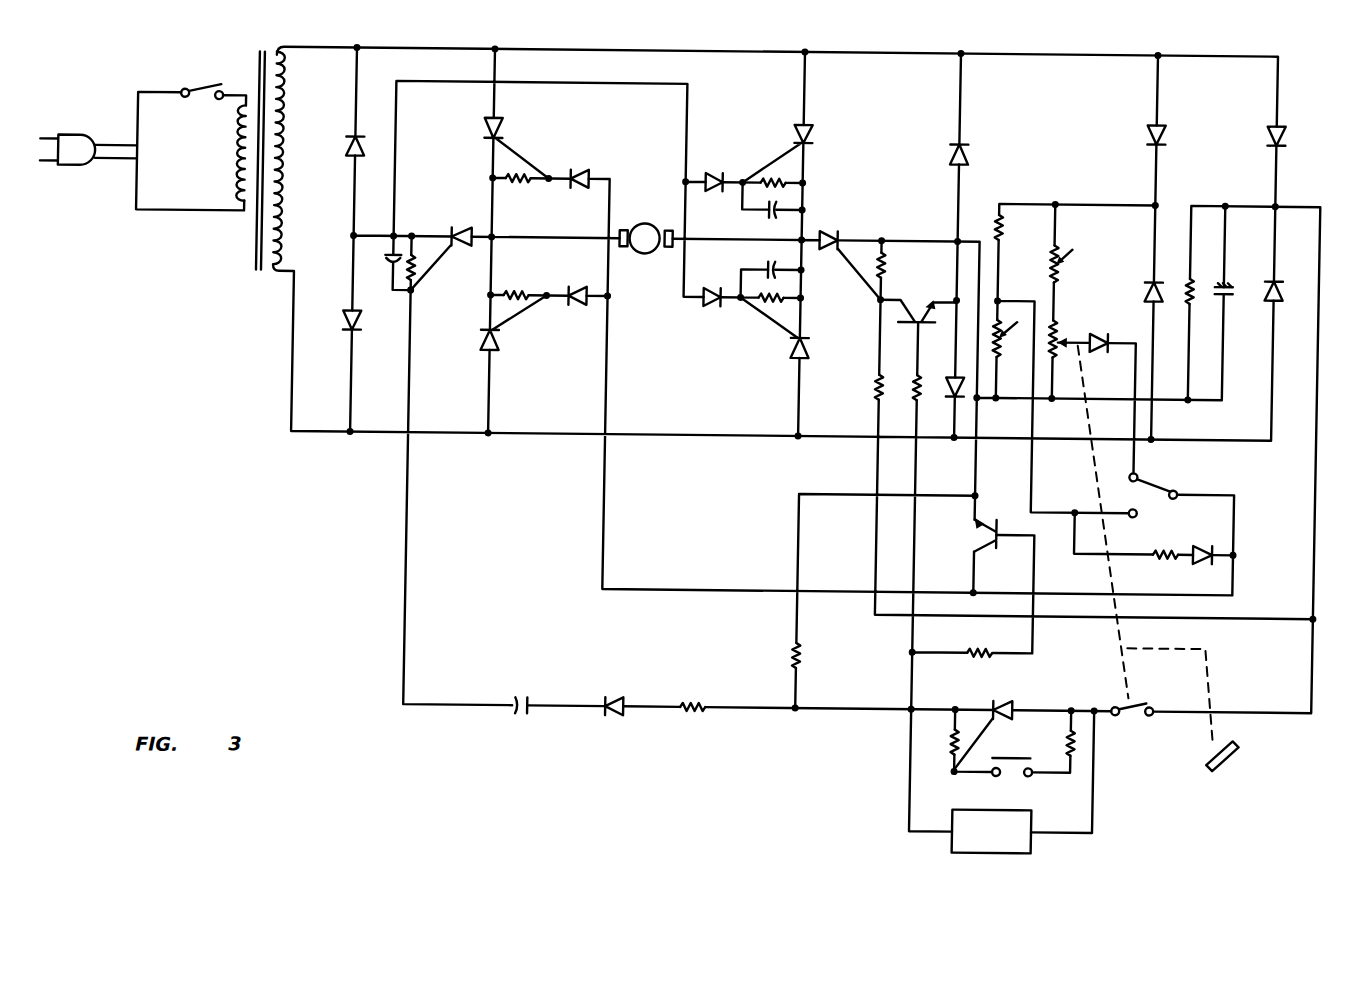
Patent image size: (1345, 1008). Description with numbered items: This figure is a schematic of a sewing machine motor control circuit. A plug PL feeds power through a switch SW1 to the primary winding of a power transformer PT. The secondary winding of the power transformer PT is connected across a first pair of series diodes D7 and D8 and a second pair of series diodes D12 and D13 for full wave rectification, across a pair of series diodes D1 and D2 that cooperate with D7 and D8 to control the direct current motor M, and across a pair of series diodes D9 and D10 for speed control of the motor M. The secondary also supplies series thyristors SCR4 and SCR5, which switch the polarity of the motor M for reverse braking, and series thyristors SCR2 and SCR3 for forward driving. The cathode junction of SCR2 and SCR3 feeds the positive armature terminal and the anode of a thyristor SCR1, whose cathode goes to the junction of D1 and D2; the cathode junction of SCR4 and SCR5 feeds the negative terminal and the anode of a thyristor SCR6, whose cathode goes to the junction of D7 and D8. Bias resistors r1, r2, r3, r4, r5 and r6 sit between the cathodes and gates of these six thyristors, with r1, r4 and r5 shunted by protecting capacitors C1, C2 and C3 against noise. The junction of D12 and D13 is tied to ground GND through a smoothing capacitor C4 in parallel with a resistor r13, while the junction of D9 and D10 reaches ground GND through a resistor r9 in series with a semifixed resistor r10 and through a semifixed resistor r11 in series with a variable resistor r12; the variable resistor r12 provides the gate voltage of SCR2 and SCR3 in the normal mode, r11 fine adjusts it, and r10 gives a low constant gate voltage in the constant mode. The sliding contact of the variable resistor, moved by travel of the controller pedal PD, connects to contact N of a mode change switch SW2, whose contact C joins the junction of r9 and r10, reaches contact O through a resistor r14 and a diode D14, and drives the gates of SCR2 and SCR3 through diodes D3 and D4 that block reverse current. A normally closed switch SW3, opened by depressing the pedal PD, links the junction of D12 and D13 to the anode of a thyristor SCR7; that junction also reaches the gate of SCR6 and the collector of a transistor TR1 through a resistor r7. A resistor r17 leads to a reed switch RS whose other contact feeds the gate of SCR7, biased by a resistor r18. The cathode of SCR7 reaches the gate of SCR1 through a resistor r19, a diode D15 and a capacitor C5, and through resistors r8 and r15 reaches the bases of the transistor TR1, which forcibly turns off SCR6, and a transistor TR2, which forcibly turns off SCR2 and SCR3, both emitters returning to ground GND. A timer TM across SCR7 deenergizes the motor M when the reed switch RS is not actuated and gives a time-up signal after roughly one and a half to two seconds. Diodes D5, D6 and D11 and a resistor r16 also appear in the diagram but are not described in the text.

The plug PL is at (75, 172).
The switch SW1 is at (193, 95).
The power transformer PT is at (251, 254).
The diode D1 is at (353, 138).
The diode D2 is at (353, 312).
The protecting capacitor C1 is at (392, 274).
The bias resistor r1 is at (419, 254).
The thyristor SCR1 is at (455, 234).
The thyristor SCR2 is at (503, 141).
The thyristor SCR3 is at (500, 347).
The bias resistor r2 is at (521, 187).
The bias resistor r3 is at (514, 292).
The diode D3 is at (571, 175).
The diode D4 is at (571, 291).
The direct current motor M is at (642, 247).
The diode D5 is at (716, 190).
The diode D6 is at (715, 306).
The bias resistor r4 is at (768, 178).
The bias resistor r5 is at (767, 306).
The protecting capacitor C2 is at (769, 216).
The protecting capacitor C3 is at (769, 263).
The thyristor SCR4 is at (812, 147).
The thyristor SCR5 is at (811, 340).
The thyristor SCR6 is at (840, 234).
The bias resistor r6 is at (888, 256).
The resistor r7 is at (880, 388).
The resistor r8 is at (918, 390).
The switching transistor TR1 is at (906, 326).
The diode D7 is at (965, 146).
The diode D8 is at (958, 400).
The diode D9 is at (1153, 145).
The diode D10 is at (1152, 280).
The diode D11 is at (1112, 336).
The diode D12 is at (1273, 145).
The diode D13 is at (1281, 304).
The resistor r9 is at (1006, 232).
The semifixed resistor r10 is at (1018, 350).
The semifixed resistor r11 is at (1062, 274).
The variable resistor r12 is at (1061, 323).
The resistor r13 is at (1192, 304).
The smoothing capacitor C4 is at (1233, 298).
The ground GND is at (983, 400).
The transistor TR2 is at (998, 543).
The resistor r15 is at (985, 648).
The mode change switch SW2 is at (1182, 517).
The resistor r14 is at (1158, 560).
The diode D14 is at (1208, 561).
The resistor r16 is at (813, 668).
The capacitor C5 is at (538, 700).
The diode D15 is at (633, 699).
The resistor r19 is at (714, 705).
The thyristor SCR7 is at (1005, 704).
The resistor r17 is at (1085, 753).
The bias resistor r18 is at (966, 752).
The reed switch RS is at (1025, 755).
The timer TM is at (1015, 808).
The normally closed switch SW3 is at (1148, 704).
The controller pedal PD is at (1247, 750).